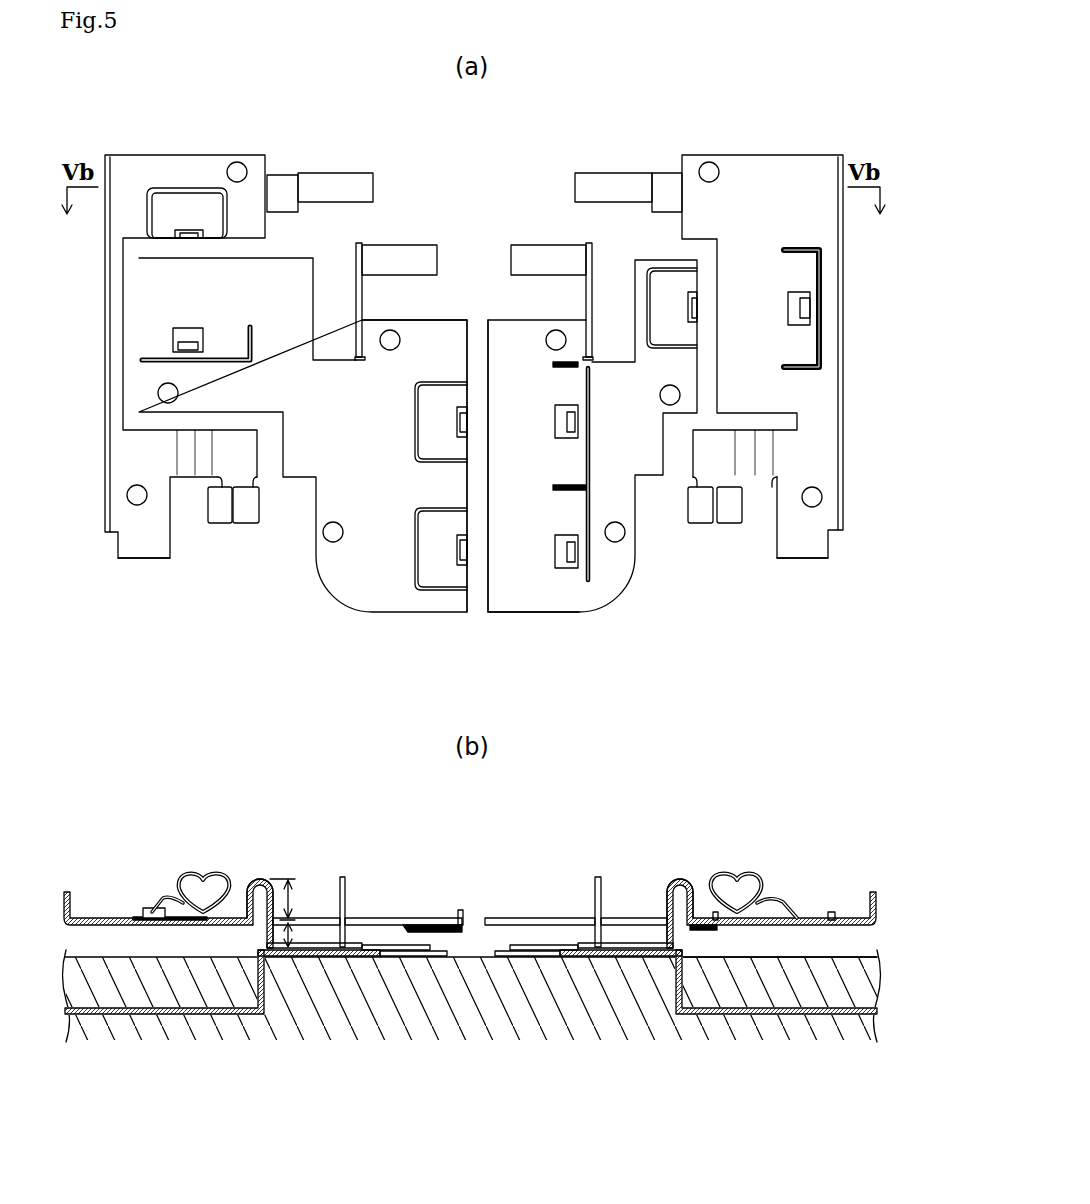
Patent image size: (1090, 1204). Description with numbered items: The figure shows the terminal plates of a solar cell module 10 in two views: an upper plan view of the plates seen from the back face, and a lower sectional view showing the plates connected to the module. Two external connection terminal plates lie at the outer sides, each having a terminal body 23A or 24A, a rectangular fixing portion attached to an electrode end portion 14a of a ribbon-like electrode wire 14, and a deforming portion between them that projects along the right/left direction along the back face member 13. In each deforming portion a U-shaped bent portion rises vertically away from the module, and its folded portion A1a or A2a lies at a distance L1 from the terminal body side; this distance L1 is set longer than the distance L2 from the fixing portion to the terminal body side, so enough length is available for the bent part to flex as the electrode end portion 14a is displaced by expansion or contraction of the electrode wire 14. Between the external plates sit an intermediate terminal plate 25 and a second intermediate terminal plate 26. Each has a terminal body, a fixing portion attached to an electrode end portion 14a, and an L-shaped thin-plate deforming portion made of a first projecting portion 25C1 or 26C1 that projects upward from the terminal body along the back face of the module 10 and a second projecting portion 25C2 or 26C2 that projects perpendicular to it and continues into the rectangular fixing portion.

The solar cell module 10 is at (465, 1010).
The back face member 13 is at (835, 967).
The ribbon-like electrode wire 14 is at (471, 1013).
The electrode end portion 14a is at (343, 952).
The terminal body 23A is at (145, 547).
The terminal body 24A is at (800, 552).
The intermediate terminal plate 25 is at (355, 587).
The first projecting portion 25C1 is at (356, 303).
The second projecting portion 25C2 is at (357, 242).
The intermediate terminal plate 26 is at (645, 550).
The first projecting portion 26C1 is at (592, 307).
The second projecting portion 26C2 is at (590, 242).
The folded portion A1a is at (257, 877).
The folded portion A2a is at (677, 878).
The distance L1 is at (265, 910).
The distance L2 is at (285, 933).